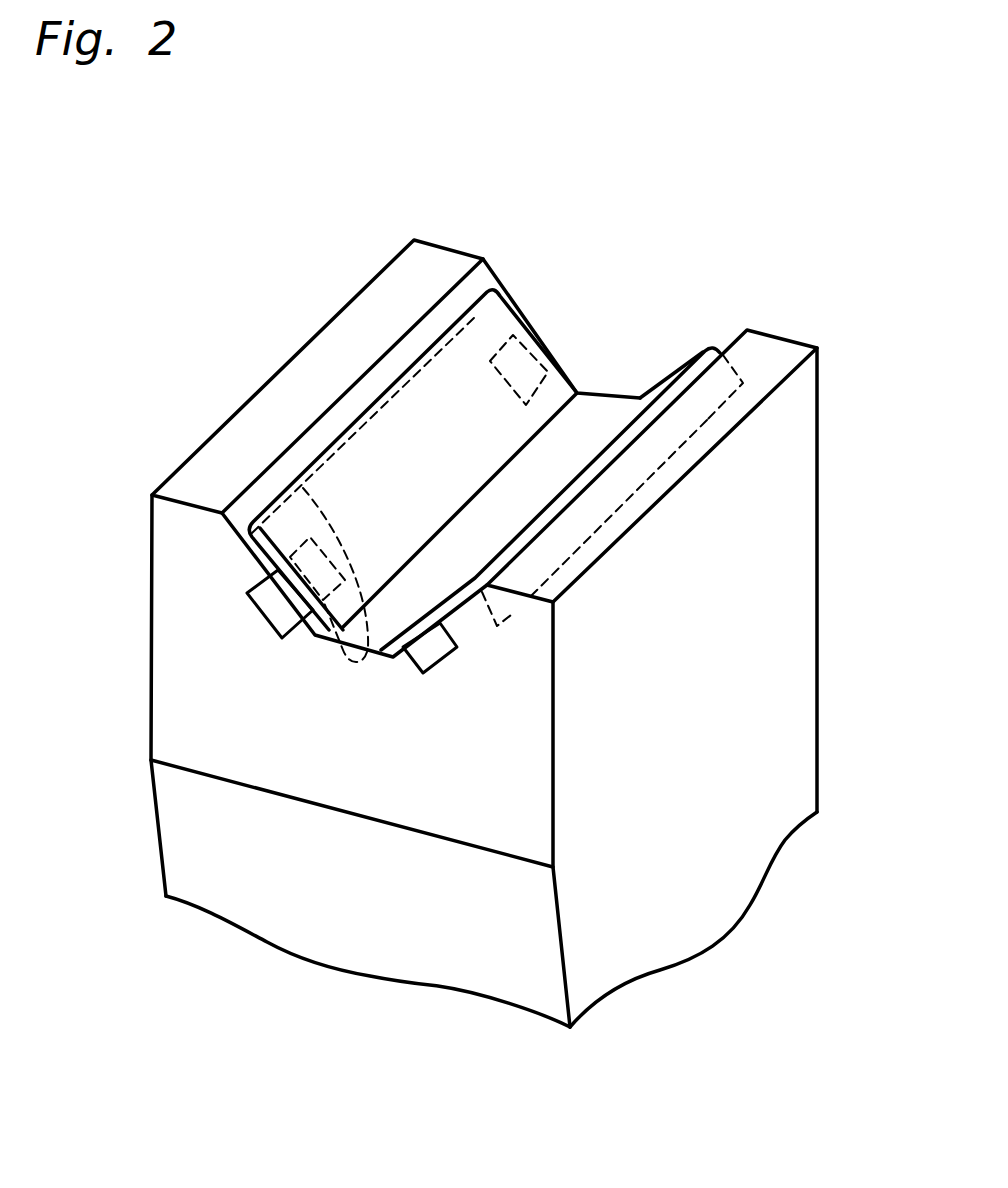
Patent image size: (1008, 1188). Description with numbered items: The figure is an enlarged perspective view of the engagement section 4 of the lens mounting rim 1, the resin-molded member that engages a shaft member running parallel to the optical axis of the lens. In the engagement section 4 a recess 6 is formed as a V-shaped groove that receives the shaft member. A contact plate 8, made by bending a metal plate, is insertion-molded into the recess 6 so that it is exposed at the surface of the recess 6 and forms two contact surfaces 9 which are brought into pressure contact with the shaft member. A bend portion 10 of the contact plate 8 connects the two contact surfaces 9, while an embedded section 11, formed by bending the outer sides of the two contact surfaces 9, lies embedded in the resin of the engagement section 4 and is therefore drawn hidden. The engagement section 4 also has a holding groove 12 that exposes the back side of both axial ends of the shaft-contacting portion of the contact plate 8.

The lens mounting rim 1 is at (303, 217).
The engagement section 4 is at (373, 333).
The recess 6 is at (558, 302).
The contact plate 8 is at (455, 358).
The contact surfaces 9 is at (525, 513).
The bend portion 10 is at (300, 490).
The embedded section 11 is at (256, 520).
The holding groove 12 is at (633, 400).